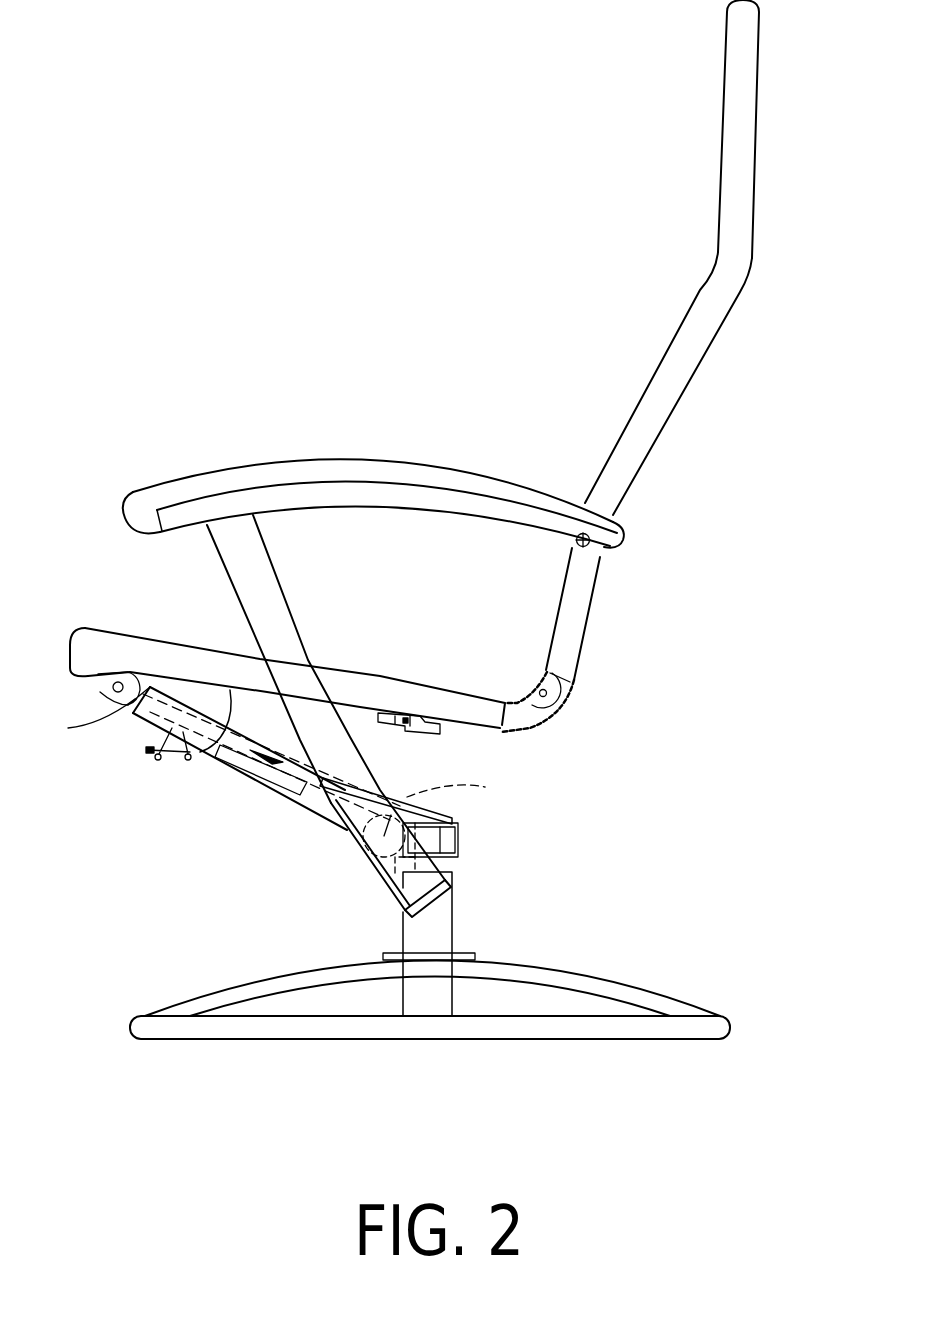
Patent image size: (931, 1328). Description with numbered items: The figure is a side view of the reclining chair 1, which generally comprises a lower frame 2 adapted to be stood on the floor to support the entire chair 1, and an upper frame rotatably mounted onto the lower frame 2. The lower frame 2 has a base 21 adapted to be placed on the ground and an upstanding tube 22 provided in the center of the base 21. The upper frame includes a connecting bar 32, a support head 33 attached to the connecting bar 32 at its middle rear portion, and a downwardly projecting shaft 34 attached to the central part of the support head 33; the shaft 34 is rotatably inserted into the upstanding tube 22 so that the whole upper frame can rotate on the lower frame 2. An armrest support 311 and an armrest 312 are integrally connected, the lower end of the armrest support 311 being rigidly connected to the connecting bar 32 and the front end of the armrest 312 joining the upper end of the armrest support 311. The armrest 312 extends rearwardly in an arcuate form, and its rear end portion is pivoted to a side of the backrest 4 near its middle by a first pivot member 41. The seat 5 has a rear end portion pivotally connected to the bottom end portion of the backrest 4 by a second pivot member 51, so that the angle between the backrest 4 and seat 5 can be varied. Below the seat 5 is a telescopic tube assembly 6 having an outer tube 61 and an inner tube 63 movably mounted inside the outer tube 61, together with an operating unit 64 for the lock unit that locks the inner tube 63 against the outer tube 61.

The reclining chair 1 is at (363, 885).
The lower frame 2 is at (728, 1015).
The base 21 is at (567, 1027).
The upstanding tube 22 is at (437, 935).
The connecting bar 32 is at (485, 787).
The support head 33 is at (460, 843).
The shaft 34 is at (460, 857).
The armrest support 311 is at (253, 612).
The armrest 312 is at (344, 495).
The backrest 4 is at (702, 318).
The first pivot member 41 is at (583, 548).
The seat 5 is at (132, 648).
The second pivot member 51 is at (547, 693).
The telescopic tube assembly 6 is at (218, 772).
The outer tube 61 is at (270, 790).
The inner tube 63 is at (125, 705).
The operating unit 64 is at (437, 737).